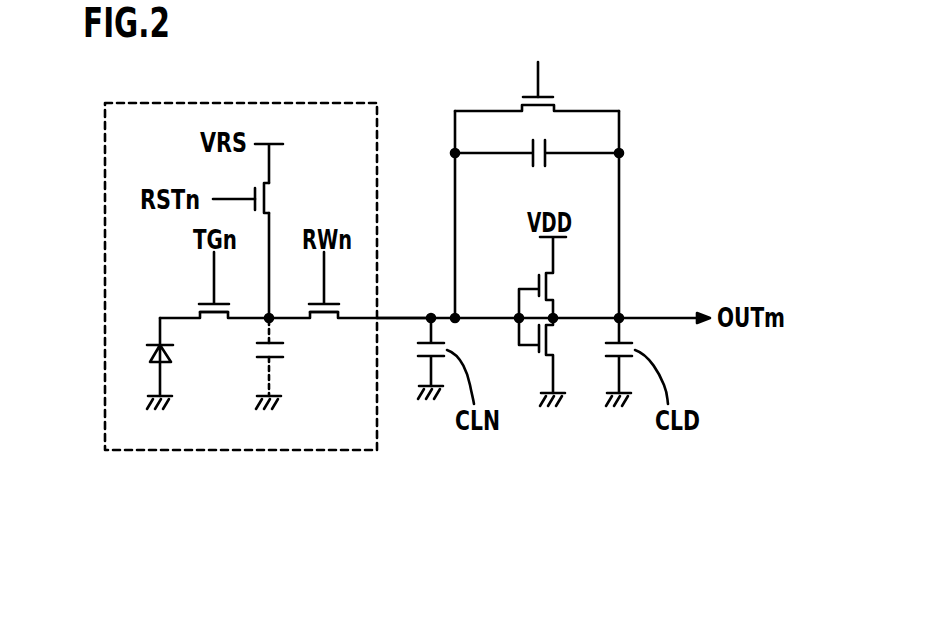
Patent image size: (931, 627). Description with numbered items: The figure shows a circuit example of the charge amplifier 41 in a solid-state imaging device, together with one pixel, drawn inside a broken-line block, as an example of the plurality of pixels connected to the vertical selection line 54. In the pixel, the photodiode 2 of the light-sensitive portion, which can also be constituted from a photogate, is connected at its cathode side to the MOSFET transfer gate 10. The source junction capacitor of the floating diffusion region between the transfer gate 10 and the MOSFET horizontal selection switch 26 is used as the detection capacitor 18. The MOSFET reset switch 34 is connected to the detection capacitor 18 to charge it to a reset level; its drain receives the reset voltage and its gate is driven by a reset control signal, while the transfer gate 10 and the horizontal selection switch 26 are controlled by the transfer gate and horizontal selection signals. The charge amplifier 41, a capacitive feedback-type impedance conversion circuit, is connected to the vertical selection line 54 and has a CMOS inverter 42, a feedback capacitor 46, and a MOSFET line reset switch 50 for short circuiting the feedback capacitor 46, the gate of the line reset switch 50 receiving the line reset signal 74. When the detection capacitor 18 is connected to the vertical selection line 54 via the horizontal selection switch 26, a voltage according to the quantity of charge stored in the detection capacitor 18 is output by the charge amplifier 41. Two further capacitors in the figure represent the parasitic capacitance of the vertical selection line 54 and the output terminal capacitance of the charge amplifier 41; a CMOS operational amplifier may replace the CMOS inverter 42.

The photodiode 2 is at (151, 356).
The transfer gate 10 is at (213, 321).
The detection capacitor 18 is at (282, 362).
The horizontal selection switch 26 is at (322, 321).
The reset switch 34 is at (270, 199).
The vertical selection line 54 is at (405, 316).
The line reset signal LRST 74 is at (535, 64).
The line reset switch 50 is at (537, 112).
The feedback capacitor 46 is at (540, 168).
The CMOS inverter 42 is at (554, 283).
The charge amplifier 41 is at (536, 373).